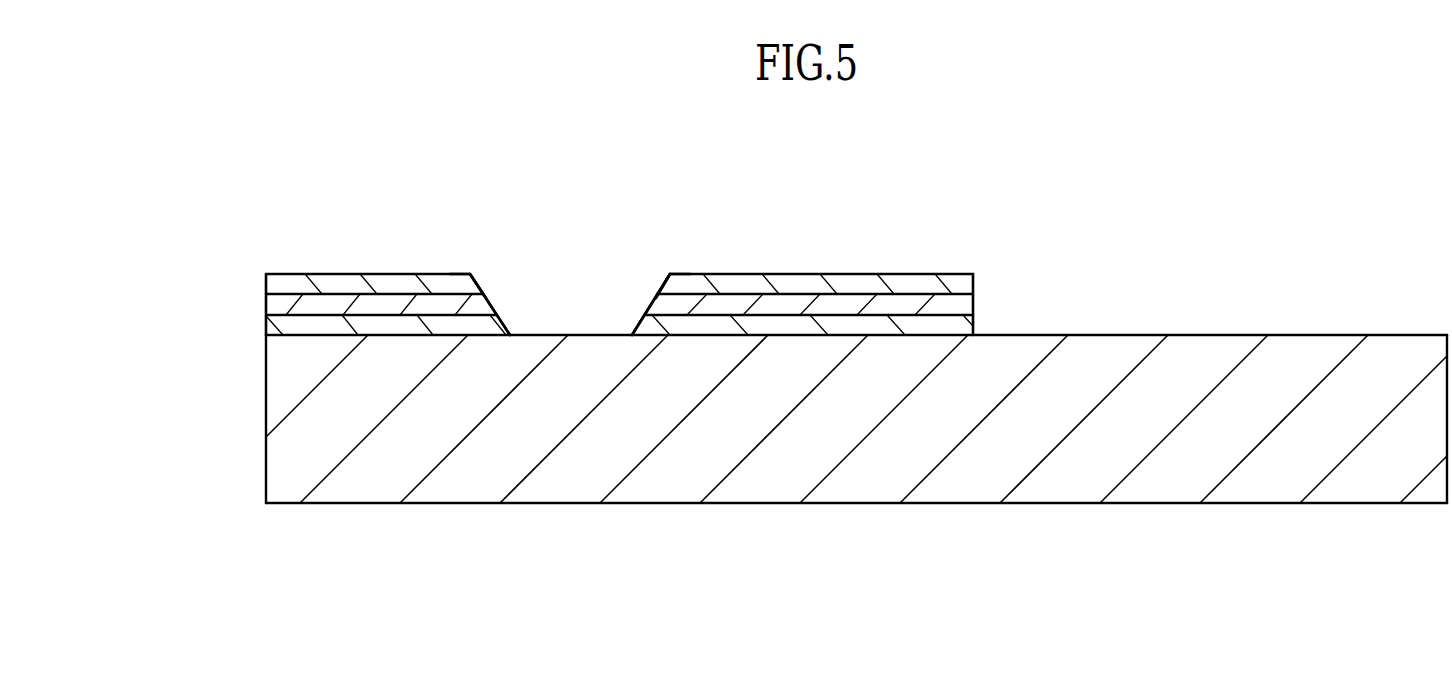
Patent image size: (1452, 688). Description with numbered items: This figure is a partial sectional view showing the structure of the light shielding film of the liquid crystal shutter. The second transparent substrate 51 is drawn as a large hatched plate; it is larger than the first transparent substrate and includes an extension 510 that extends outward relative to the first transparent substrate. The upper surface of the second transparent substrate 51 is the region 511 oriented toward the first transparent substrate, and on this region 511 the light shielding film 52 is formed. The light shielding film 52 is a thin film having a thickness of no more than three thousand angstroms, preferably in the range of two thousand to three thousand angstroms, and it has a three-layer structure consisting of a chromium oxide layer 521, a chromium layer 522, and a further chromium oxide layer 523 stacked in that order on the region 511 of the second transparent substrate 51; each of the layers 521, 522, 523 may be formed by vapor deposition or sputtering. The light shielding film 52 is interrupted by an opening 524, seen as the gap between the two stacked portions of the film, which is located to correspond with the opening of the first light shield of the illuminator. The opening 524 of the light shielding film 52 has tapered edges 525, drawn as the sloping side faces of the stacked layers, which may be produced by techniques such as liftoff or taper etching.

The second transparent substrate 51 is at (688, 487).
The extension 510 is at (1165, 483).
The region 511 is at (1096, 335).
The light shielding film 52 is at (530, 317).
The chromium oxide layer 521 is at (265, 328).
The chromium layer 522 is at (265, 303).
The chromium oxide layer 523 is at (265, 285).
The opening 524 is at (510, 323).
The tapered edges 525 is at (485, 286).